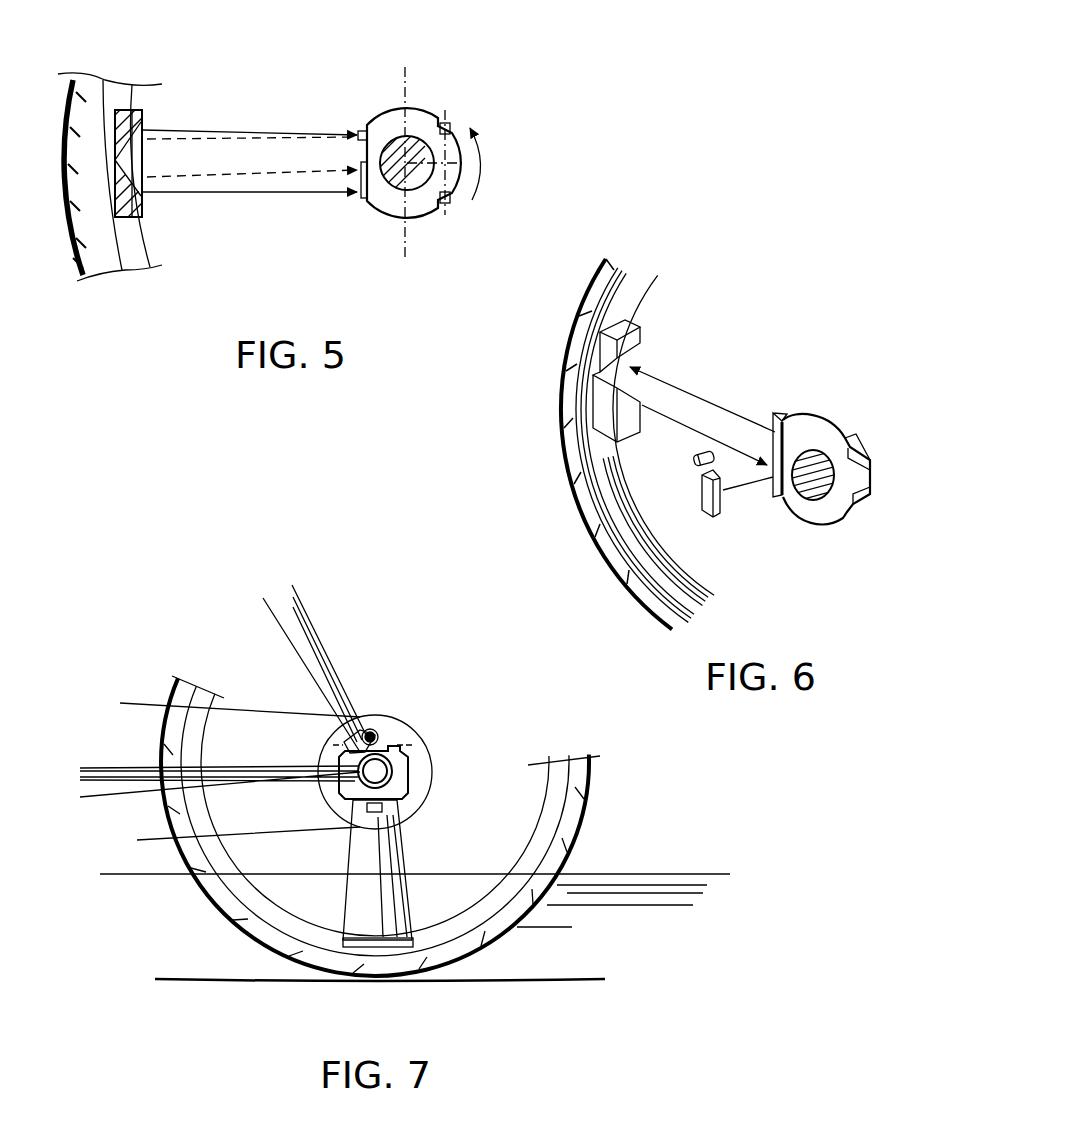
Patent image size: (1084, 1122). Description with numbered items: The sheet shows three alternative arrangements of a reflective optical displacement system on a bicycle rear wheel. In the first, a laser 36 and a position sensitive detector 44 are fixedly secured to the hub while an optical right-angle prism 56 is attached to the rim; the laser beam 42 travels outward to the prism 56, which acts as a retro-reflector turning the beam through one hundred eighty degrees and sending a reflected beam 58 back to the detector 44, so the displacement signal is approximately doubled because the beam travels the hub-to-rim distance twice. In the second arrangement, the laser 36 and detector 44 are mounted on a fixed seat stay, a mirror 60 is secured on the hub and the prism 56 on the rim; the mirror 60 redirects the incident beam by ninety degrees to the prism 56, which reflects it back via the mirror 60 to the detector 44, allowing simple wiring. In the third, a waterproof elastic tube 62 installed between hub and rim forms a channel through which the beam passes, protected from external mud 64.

In FIG. 5, the laser 36 is at (358, 133).
In FIG. 6, the laser 36 is at (700, 456).
In FIG. 5, the light beam 42 is at (200, 130).
In FIG. 5, the position sensitive detector 44 is at (363, 199).
In FIG. 6, the position sensitive detector 44 is at (703, 512).
In FIG. 5, the optical right-angle prism 56 is at (142, 110).
In FIG. 6, the optical right-angle prism 56 is at (597, 355).
In FIG. 5, the reflected beam 58 is at (243, 192).
In FIG. 6, the mirror 60 is at (783, 420).
In FIG. 7, the tube 62 is at (400, 850).
In FIG. 7, the mud 64 is at (717, 890).